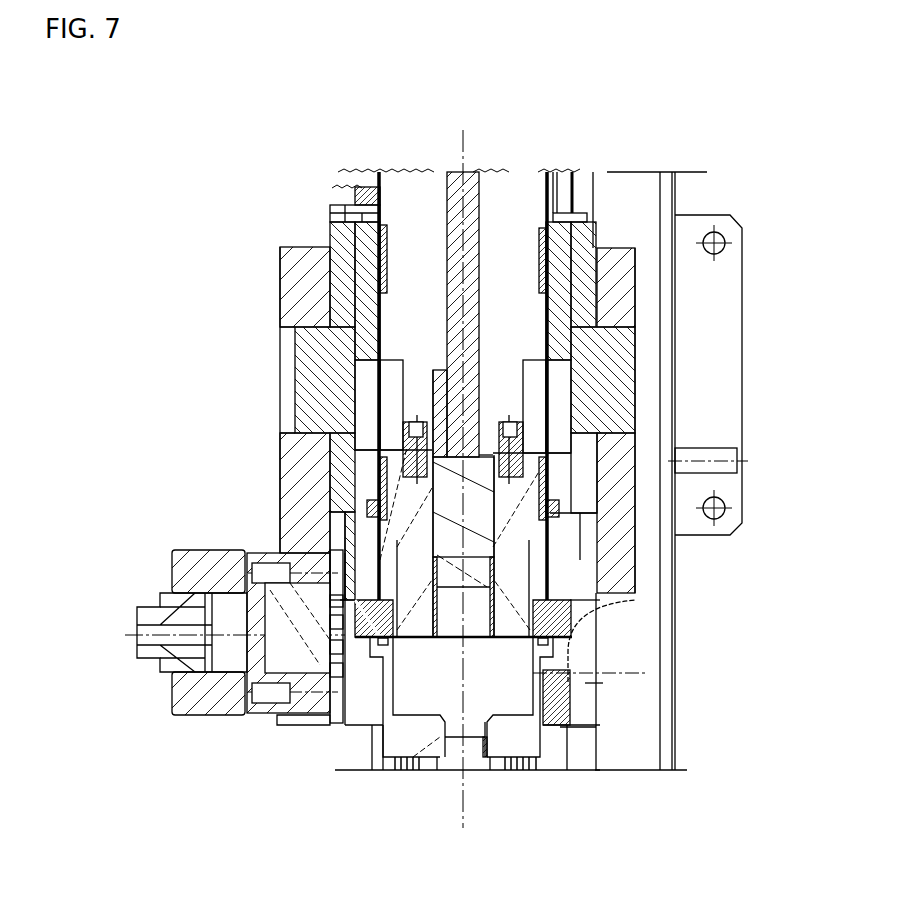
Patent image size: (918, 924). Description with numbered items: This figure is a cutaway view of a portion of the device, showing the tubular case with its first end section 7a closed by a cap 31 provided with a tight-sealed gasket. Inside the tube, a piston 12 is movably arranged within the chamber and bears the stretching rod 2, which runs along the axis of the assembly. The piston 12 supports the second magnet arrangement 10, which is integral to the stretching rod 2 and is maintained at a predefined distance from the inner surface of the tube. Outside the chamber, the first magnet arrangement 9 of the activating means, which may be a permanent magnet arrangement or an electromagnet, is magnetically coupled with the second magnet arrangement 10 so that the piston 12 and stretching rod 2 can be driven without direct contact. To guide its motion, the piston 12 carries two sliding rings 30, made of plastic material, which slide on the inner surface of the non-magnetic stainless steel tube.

The stretching rod 2 is at (458, 190).
The piston 12 is at (514, 220).
The first magnet arrangement 9 is at (376, 372).
The second magnet arrangement 10 is at (393, 423).
The sliding rings 30 is at (380, 267).
The cap 31 is at (380, 742).
The first end section 7a is at (575, 686).